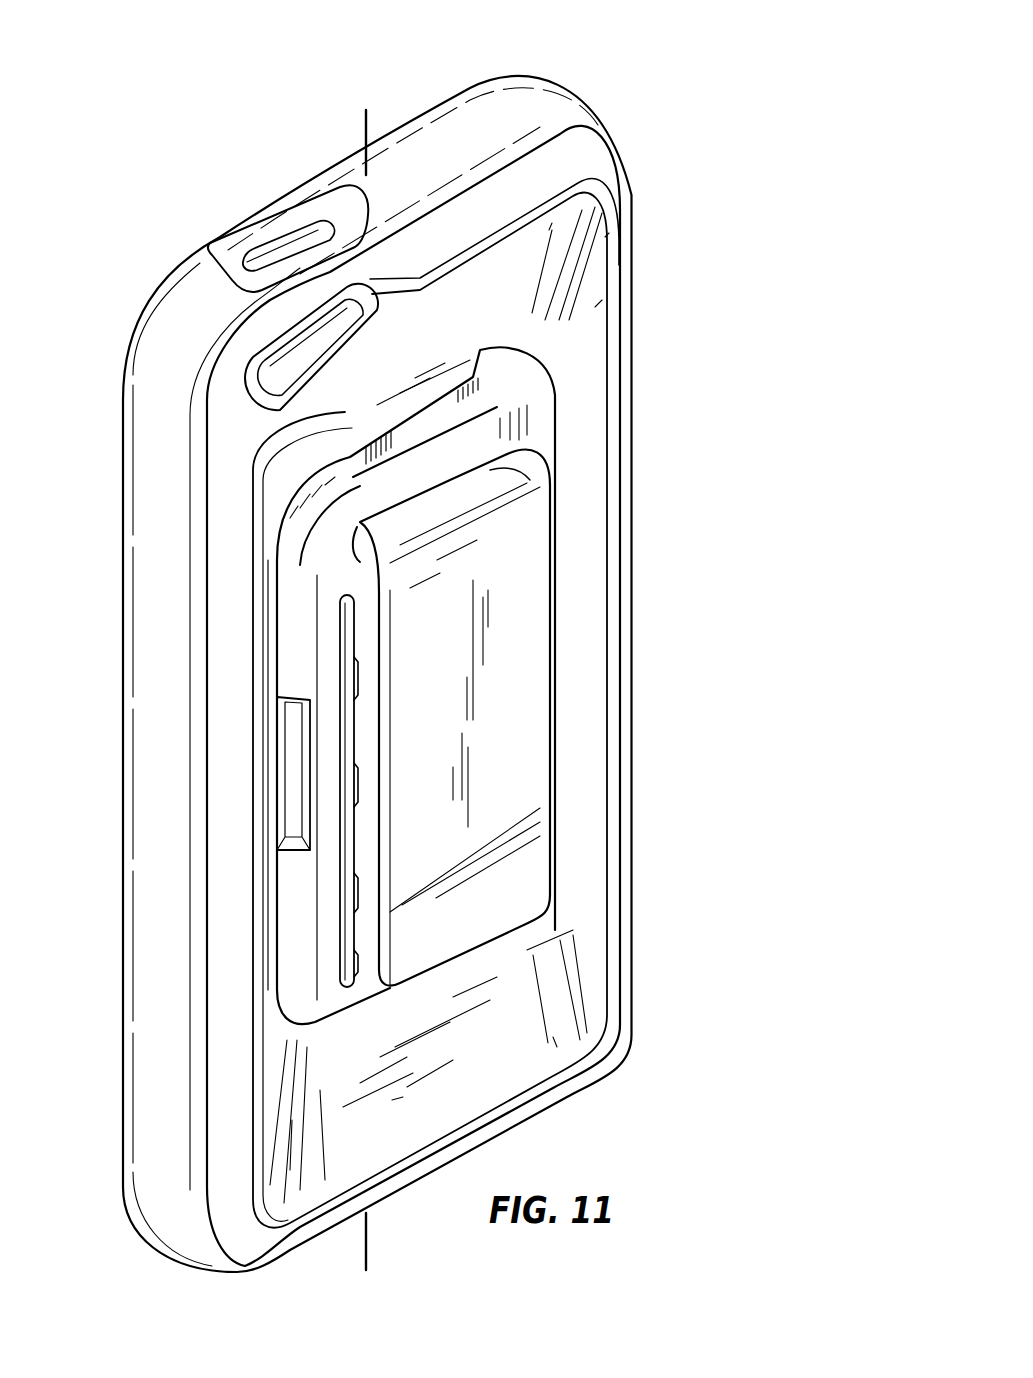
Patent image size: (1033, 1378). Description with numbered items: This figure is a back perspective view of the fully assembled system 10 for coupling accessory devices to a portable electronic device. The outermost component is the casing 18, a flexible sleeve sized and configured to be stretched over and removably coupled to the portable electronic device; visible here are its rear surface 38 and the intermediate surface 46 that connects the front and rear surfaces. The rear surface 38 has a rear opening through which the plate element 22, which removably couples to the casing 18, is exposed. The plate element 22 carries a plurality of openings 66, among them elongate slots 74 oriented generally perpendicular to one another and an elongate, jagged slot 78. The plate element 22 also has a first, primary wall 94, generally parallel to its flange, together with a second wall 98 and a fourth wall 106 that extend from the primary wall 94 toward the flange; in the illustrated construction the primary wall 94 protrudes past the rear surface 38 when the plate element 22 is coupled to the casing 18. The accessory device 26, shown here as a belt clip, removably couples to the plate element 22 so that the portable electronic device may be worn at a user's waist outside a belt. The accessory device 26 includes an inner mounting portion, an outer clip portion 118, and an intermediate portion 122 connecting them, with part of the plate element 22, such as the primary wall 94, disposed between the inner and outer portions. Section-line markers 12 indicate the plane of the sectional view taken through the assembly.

The system 10 is at (137, 214).
The section line 12 is at (364, 136).
The casing 18 is at (599, 96).
The plate element 22 is at (542, 432).
The accessory device 26 is at (530, 650).
The rear surface 38 is at (588, 274).
The intermediate surface 46 is at (452, 140).
The openings 66 is at (468, 392).
The elongate slots 74 is at (293, 817).
The elongate, jagged slot 78 is at (340, 632).
The primary wall 94 is at (345, 550).
The second wall 98 is at (350, 477).
The fourth wall 106 is at (295, 597).
The outer portion 118 is at (530, 712).
The intermediate portion 122 is at (497, 478).